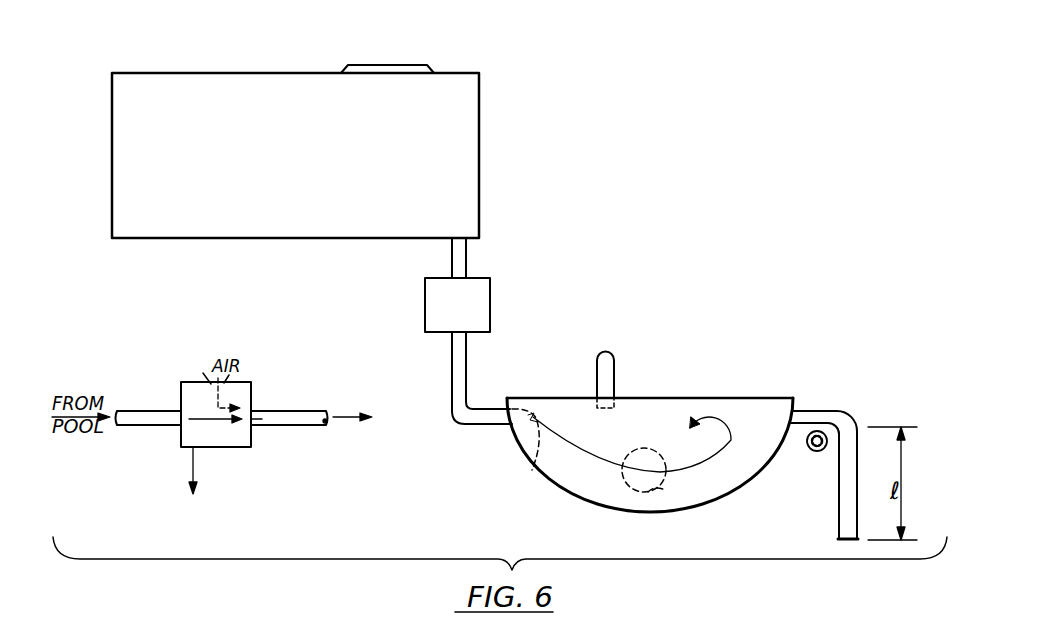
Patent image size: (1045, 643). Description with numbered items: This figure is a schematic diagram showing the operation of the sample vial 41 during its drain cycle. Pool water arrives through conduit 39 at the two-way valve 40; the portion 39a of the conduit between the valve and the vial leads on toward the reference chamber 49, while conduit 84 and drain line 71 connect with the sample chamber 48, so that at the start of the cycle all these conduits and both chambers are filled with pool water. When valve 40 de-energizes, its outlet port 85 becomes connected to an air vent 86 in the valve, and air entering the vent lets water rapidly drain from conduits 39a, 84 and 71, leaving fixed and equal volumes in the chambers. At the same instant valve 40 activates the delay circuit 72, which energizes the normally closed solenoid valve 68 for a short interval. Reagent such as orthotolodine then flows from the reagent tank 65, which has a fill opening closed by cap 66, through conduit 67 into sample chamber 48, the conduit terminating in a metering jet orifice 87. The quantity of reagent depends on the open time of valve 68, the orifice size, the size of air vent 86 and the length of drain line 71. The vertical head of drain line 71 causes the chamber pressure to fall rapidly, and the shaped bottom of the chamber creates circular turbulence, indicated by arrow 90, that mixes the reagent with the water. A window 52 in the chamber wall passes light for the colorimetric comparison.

The reagent tank 65 is at (318, 232).
The cap 66 is at (410, 70).
The solenoid valve 68 is at (425, 310).
The conduit 67 is at (452, 378).
The sample vial 41 is at (663, 423).
The sample chamber 48 is at (735, 385).
The conduit 84 is at (597, 375).
The arrow 90 is at (733, 428).
The window 52 is at (662, 491).
The metering jet orifice 87 is at (530, 466).
The drain line 71 is at (842, 508).
The conduit 39 is at (140, 411).
The portion of conduit 39a is at (295, 411).
The two-way valve 40 is at (233, 437).
The air vent 86 is at (206, 377).
The outlet port 85 is at (251, 419).
The delay circuit 72 is at (197, 493).
The reference chamber 49 is at (400, 434).